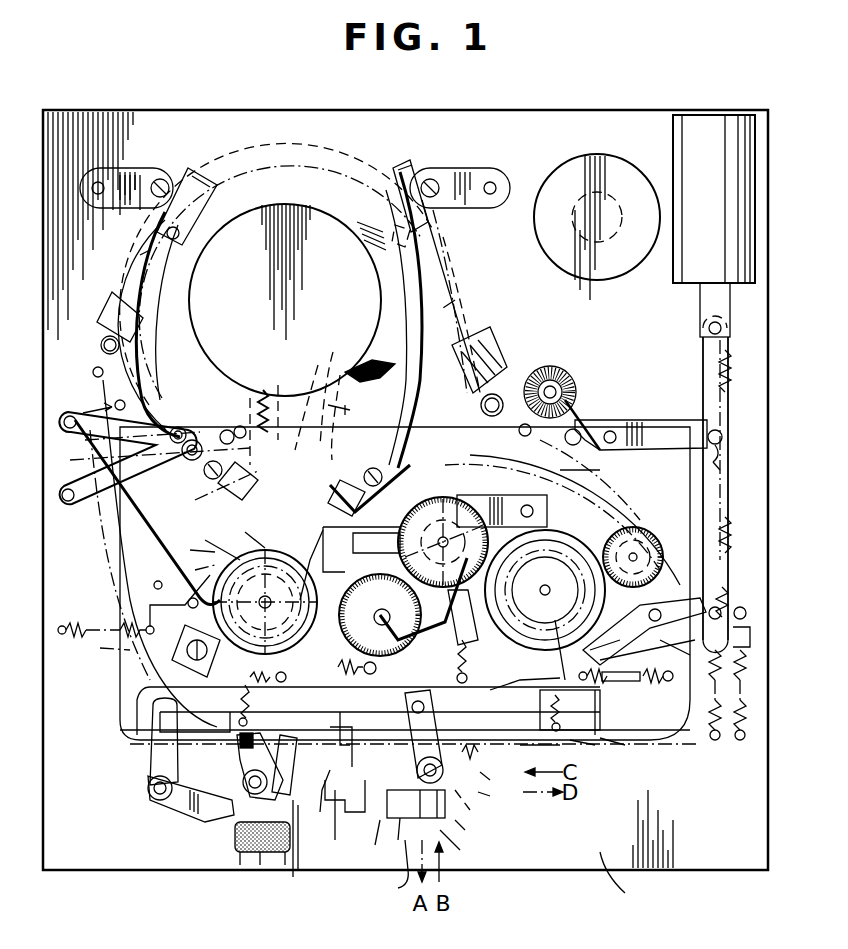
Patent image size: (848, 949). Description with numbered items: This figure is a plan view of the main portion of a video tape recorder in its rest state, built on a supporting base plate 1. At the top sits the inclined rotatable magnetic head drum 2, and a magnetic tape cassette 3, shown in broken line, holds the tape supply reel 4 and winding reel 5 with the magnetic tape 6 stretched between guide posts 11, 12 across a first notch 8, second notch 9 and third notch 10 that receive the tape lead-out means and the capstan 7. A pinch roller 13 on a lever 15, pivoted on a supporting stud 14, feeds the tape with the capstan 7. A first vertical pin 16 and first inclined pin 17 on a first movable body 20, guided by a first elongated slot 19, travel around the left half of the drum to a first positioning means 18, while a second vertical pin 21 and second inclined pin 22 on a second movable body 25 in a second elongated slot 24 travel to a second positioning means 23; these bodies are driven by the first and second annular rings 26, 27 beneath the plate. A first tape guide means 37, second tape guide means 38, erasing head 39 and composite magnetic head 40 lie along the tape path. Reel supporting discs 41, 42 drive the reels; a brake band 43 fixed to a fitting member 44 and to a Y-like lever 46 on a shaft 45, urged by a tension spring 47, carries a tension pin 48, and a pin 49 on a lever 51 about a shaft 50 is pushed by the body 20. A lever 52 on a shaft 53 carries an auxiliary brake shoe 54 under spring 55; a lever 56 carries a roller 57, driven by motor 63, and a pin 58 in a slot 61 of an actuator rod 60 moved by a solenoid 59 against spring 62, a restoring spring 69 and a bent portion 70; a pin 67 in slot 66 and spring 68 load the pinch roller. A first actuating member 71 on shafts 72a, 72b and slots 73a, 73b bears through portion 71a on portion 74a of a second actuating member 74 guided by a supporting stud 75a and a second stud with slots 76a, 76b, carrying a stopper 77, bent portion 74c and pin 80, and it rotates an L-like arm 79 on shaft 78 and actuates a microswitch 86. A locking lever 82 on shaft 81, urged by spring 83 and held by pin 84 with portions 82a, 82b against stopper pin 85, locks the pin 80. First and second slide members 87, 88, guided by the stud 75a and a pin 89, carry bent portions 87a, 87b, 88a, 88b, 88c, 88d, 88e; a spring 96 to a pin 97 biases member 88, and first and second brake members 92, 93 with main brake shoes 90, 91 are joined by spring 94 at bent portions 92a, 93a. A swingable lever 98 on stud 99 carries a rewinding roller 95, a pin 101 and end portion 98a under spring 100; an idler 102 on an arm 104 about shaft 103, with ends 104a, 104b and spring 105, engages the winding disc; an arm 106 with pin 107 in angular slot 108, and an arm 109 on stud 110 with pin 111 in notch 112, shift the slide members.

The supporting base plate 1 is at (617, 886).
The rotatable magnetic head drum 2 is at (287, 212).
The magnetic tape cassette 3 is at (128, 672).
The tape supply reel 4 is at (106, 652).
The winding reel 5 is at (633, 490).
The magnetic tape 6 is at (440, 298).
The capstan 7 is at (505, 415).
The first notch 8 is at (248, 420).
The second notch 9 is at (365, 378).
The third notch 10 is at (550, 450).
The guide post 11 is at (130, 436).
The guide post 12 is at (575, 425).
The pinch roller 13 is at (549, 366).
The supporting stud 14 is at (614, 430).
The lever 15 is at (668, 436).
The first vertical pin 16 is at (165, 235).
The first inclined pin 17 is at (228, 428).
The first positioning means 18 is at (212, 203).
The first elongated slot 19 is at (150, 250).
The first movable body 20 is at (215, 500).
The second vertical pin 21 is at (415, 238).
The second inclined pin 22 is at (378, 382).
The second positioning means 23 is at (390, 205).
The second elongated slot 24 is at (440, 267).
The second movable body 25 is at (392, 480).
The first annular ring 26 is at (342, 160).
The second annular ring 27 is at (318, 165).
The first tape guide means 37 is at (100, 343).
The second tape guide means 38 is at (518, 432).
The erasing head 39 is at (118, 297).
The composite magnetic head 40 is at (478, 338).
The supply reel supporting disc 41 is at (187, 545).
The winding reel supporting disc 42 is at (548, 530).
The brake band 43 is at (190, 570).
The fitting member 44 is at (190, 625).
The supporting shaft 45 is at (154, 585).
The Y-like lever 46 is at (118, 515).
The tension spring 47 is at (72, 625).
The tension pin 48 is at (68, 414).
The pin 49 is at (94, 368).
The supporting shaft 50 is at (66, 503).
The lever 51 is at (96, 505).
The lever 52 is at (610, 658).
The supporting shaft 53 is at (647, 651).
The auxiliary brake shoe 54 is at (595, 640).
The tension spring 55 is at (742, 742).
The lever 56 is at (674, 657).
The roller 57 is at (655, 545).
The pin 58 is at (730, 595).
The solenoid 59 is at (690, 275).
The actuator rod 60 is at (728, 490).
The elongated slot 61 is at (749, 631).
The tension spring 62 is at (731, 535).
The motor 63 is at (568, 168).
The elongated slot 66 is at (722, 462).
The pin 67 is at (722, 437).
The tension spring 68 is at (731, 375).
The restoring tension spring 69 is at (710, 740).
The bent portion 70 is at (736, 602).
The first actuating member 71 is at (412, 833).
The portion of first actuating member 71a is at (384, 843).
The supporting shaft 72a is at (476, 831).
The supporting shaft 72b is at (470, 520).
The elongated slot 73a is at (467, 848).
The elongated slot 73b is at (545, 590).
The second actuating member 74 is at (288, 850).
The portion of second actuating member 74a is at (337, 828).
The bent portion 74c is at (265, 602).
The supporting stud 75a is at (283, 796).
The elongated slot 76a is at (327, 769).
The elongated slot 76b is at (208, 537).
The stopper 77 is at (375, 673).
The supporting shaft 78 is at (243, 782).
The L-like arm 79 is at (265, 760).
The pin 80 is at (241, 530).
The supporting shaft 81 is at (268, 420).
The locking lever 82 is at (228, 470).
The portion of lock lever 82a is at (352, 417).
The portion of lock lever 82b is at (308, 399).
The tension spring 83 is at (276, 380).
The pin 84 is at (250, 488).
The stopper pin 85 is at (333, 362).
The microswitch 86 is at (235, 840).
The first slide member 87 is at (622, 752).
The first bent portion 87a is at (554, 640).
The second bent portion 87b is at (499, 795).
The second slide member 88 is at (130, 735).
The first bent portion 88a is at (228, 745).
The second bent portion 88b is at (397, 819).
The third bent portion 88c is at (235, 699).
The fourth bent portion 88d is at (365, 725).
The fifth bent portion 88e is at (590, 716).
The supporting pin 89 is at (471, 659).
The main brake shoe 90 is at (265, 608).
The main brake shoe 91 is at (466, 616).
The first brake member 92 is at (275, 602).
The bent portion 92a is at (334, 804).
The second brake member 93 is at (587, 753).
The bent portion 93a is at (497, 778).
The tension spring 94 is at (490, 753).
The rewinding roller 95 is at (265, 602).
The tension spring 96 is at (622, 690).
The pin 97 is at (668, 685).
The swingable lever 98 is at (326, 555).
The end portion of swingable lever 98a is at (406, 736).
The supporting stud 99 is at (418, 520).
The tension spring 100 is at (249, 594).
The pin 101 is at (423, 604).
The idler 102 is at (450, 497).
The shaft 103 is at (526, 504).
The arm 104 is at (565, 498).
The end portion of arm 104a is at (361, 549).
The end portion of arm 104b is at (548, 753).
The tension spring 105 is at (530, 592).
The arm 106 is at (384, 870).
The pin 107 is at (479, 808).
The angular slot 108 is at (511, 676).
The arm 109 is at (182, 810).
The supporting stud 110 is at (150, 796).
The pin 111 is at (150, 760).
The notch 112 is at (135, 705).